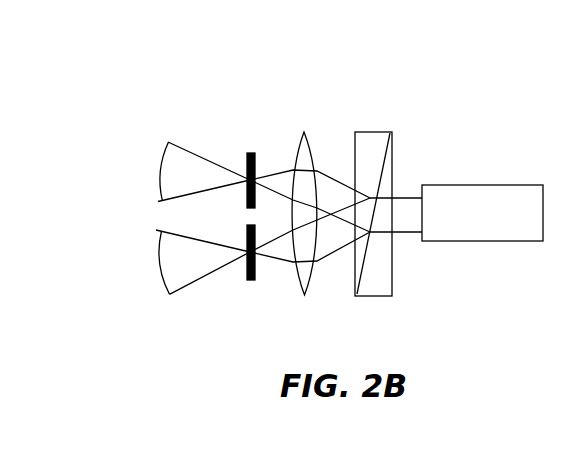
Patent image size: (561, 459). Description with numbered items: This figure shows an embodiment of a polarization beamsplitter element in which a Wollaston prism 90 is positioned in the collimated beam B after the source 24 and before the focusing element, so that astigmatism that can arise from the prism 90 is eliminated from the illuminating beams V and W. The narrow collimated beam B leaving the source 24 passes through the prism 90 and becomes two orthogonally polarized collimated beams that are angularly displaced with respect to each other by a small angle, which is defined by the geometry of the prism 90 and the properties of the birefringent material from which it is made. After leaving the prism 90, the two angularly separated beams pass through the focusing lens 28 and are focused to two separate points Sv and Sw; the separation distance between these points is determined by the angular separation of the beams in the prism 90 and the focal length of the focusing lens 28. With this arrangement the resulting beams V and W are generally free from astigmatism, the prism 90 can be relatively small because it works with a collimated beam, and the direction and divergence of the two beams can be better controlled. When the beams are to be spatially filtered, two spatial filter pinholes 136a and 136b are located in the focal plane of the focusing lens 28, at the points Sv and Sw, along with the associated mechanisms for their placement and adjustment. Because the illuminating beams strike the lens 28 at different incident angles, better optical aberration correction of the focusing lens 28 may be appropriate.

The spatial filter pinhole 136a is at (251, 152).
The spatial filter pinhole 136b is at (253, 281).
The focusing lens 28 is at (306, 130).
The Wollaston prism 90 is at (381, 131).
The source 24 is at (450, 184).
The illuminating beam V is at (160, 168).
The illuminating beam W is at (156, 263).
The focal point Sv is at (247, 175).
The focal point Sw is at (245, 257).
The collimated beam B is at (403, 234).